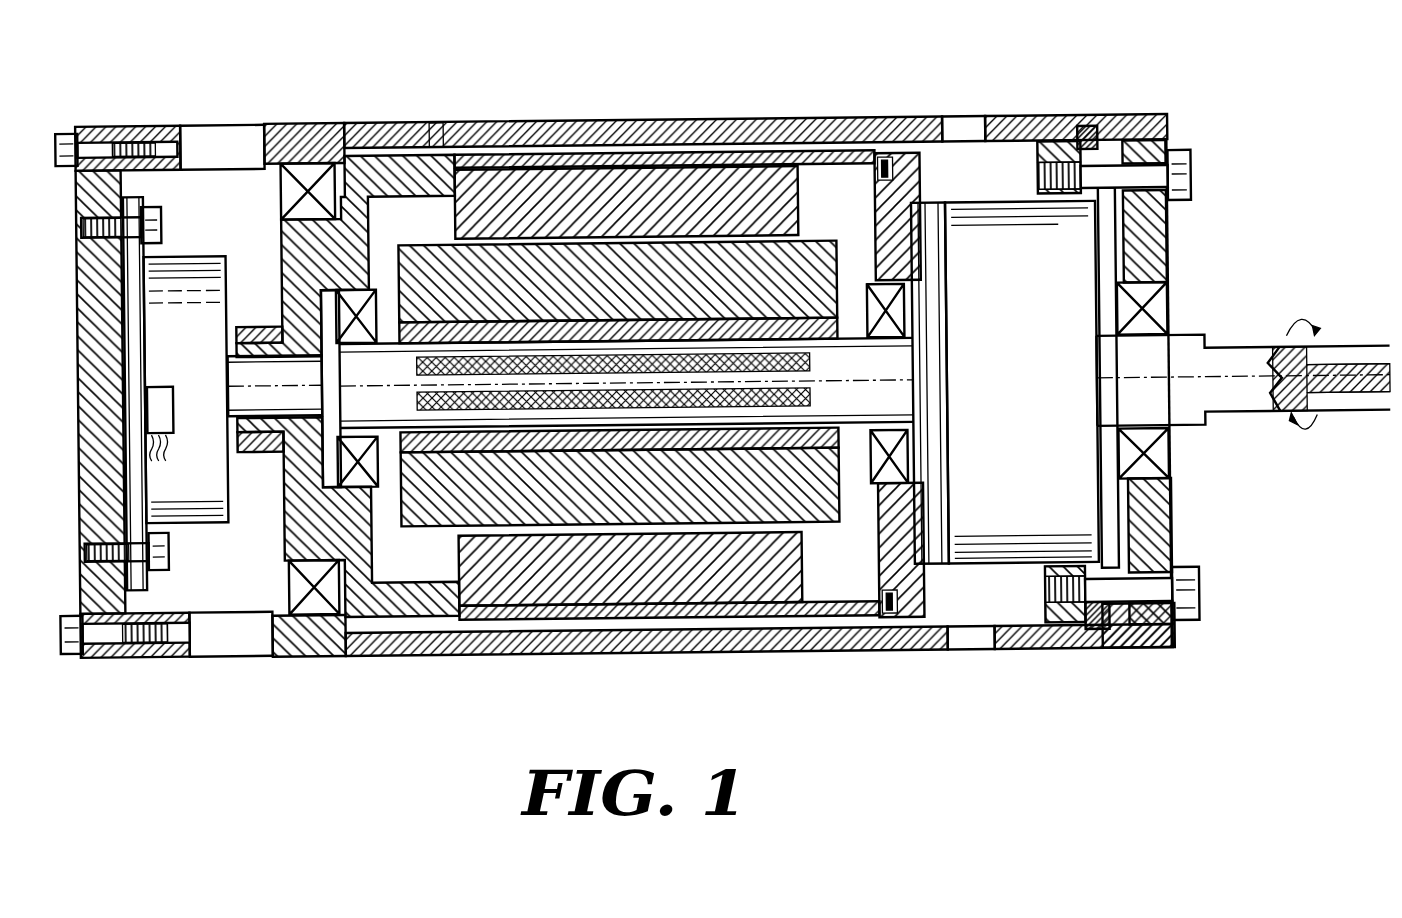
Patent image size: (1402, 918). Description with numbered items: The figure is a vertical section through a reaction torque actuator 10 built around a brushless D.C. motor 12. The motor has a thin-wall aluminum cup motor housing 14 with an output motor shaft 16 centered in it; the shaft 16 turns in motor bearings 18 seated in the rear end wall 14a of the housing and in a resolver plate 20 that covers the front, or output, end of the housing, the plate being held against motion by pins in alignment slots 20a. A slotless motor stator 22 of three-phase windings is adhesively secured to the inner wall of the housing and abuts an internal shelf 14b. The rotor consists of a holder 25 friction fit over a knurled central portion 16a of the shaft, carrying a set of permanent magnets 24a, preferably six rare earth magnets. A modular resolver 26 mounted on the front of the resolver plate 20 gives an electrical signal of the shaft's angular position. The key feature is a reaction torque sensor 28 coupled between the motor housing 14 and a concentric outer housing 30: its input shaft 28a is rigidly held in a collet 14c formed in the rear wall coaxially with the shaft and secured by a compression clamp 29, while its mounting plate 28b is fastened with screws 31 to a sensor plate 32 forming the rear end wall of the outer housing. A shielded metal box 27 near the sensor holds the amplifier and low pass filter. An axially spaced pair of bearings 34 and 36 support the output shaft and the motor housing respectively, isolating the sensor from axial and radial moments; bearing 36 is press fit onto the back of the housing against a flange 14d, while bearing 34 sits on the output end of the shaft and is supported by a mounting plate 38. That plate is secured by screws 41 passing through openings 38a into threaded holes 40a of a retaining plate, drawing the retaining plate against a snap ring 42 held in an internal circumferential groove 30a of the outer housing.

The reaction torque actuator 10 is at (1078, 92).
The brushless D.C. motor 12 is at (592, 136).
The motor housing 14 is at (404, 118).
The rear end wall 14a is at (307, 249).
The internal shelf 14b is at (457, 135).
The collet 14c is at (237, 441).
The flange 14d is at (340, 553).
The output motor shaft 16 is at (1205, 343).
The knurled central portion 16a is at (820, 367).
The motor bearings 18 is at (292, 303).
The resolver plate 20 is at (905, 155).
The alignment slots 20a is at (918, 172).
The motor stator 22 is at (540, 133).
The permanent magnets 24a is at (670, 253).
The holder 25 is at (838, 327).
The modular resolver 26 is at (985, 208).
The shielded metal box 27 is at (173, 396).
The reaction torque sensor 28 is at (192, 253).
The input shaft 28a is at (266, 386).
The mounting plate 28b is at (148, 194).
The compression clamp 29 is at (253, 452).
The outer housing 30 is at (438, 118).
The internal circumferential groove 30a is at (1090, 131).
The screws 31 is at (165, 220).
The sensor plate 32 is at (78, 341).
The bearing 34 is at (1172, 303).
The bearing 36 is at (283, 191).
The mounting plate 38 is at (1172, 253).
The openings 38a is at (1170, 137).
The threaded holes 40a is at (1040, 160).
The screws 41 is at (1195, 184).
The snap ring 42 is at (1093, 640).